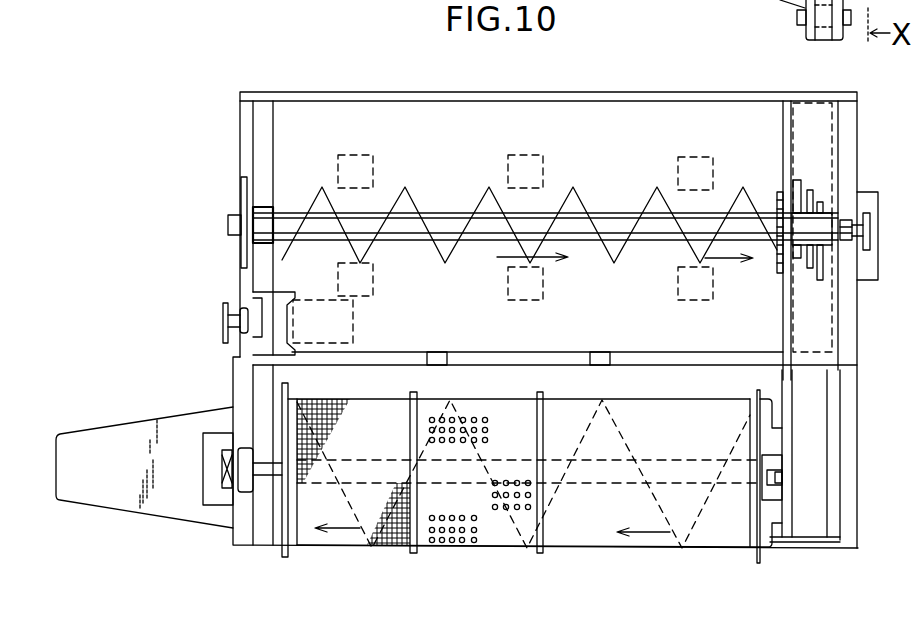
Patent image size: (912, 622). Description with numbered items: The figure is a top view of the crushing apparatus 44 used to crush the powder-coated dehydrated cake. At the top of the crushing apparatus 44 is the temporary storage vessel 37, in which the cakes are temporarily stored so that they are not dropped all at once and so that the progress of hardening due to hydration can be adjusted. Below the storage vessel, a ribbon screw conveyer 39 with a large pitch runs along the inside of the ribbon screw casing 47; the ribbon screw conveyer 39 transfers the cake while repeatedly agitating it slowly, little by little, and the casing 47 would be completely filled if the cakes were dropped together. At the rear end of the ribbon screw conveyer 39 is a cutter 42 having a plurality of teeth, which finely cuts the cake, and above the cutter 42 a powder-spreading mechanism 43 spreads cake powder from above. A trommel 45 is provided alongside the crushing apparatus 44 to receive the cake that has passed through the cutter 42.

The temporary storage vessel 37 is at (380, 92).
The ribbon screw conveyer 39 is at (580, 203).
The cutter 42 is at (798, 178).
The powder-spreading mechanism 43 is at (808, 223).
The crushing apparatus 44 is at (230, 141).
The trommel 45 is at (373, 541).
The ribbon screw casing 47 is at (450, 203).